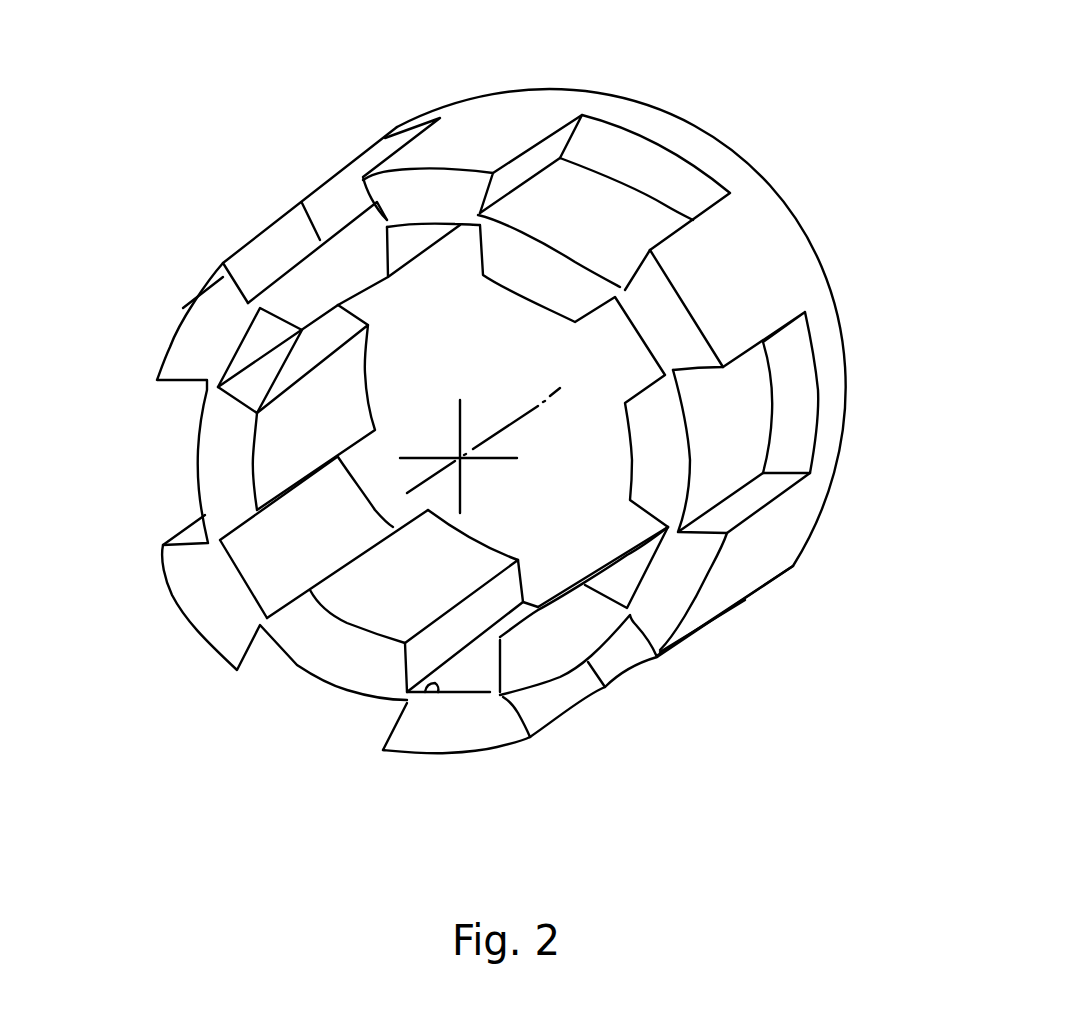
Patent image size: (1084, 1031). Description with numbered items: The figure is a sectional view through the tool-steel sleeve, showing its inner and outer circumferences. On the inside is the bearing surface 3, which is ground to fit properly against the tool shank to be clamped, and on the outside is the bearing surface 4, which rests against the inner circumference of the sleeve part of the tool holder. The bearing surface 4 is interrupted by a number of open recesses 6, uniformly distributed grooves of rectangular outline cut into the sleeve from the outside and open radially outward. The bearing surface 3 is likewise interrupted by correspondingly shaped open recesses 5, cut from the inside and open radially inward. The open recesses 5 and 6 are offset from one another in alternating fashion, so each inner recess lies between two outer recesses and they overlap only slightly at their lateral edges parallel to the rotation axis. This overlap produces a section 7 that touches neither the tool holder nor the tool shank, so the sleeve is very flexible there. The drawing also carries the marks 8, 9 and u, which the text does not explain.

The bearing surface 3 is at (263, 453).
The bearing surface 4 is at (484, 118).
The open recess 5 is at (250, 337).
The open recess 6 is at (578, 176).
The section 7 is at (620, 282).
The axis 8 is at (500, 427).
The outer surface 9 is at (777, 188).
The circumferential offset u is at (298, 662).